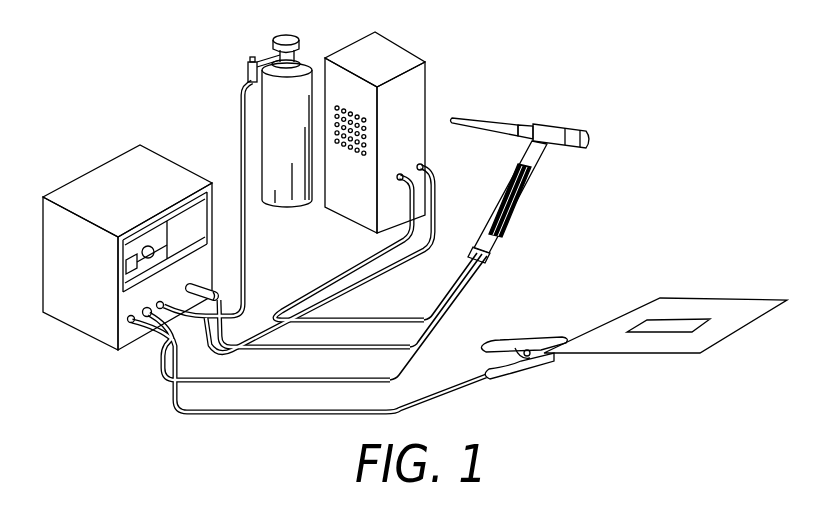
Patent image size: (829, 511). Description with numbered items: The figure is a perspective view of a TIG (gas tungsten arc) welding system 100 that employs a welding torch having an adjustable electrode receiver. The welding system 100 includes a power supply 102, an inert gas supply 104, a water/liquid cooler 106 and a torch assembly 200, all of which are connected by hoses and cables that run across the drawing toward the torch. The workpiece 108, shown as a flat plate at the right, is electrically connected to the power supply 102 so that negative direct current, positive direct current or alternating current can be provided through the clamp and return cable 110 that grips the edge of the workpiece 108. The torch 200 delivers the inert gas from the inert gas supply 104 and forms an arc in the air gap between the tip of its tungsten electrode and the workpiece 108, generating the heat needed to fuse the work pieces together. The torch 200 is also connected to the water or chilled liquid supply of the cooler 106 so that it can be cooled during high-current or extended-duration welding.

The welding system 100 is at (185, 52).
The power supply 102 is at (117, 180).
The inert gas supply 104 is at (300, 67).
The water/liquid cooler 106 is at (417, 97).
The workpiece 108 is at (677, 302).
The clamp and return cable 110 is at (531, 337).
The torch assembly 200 is at (570, 115).